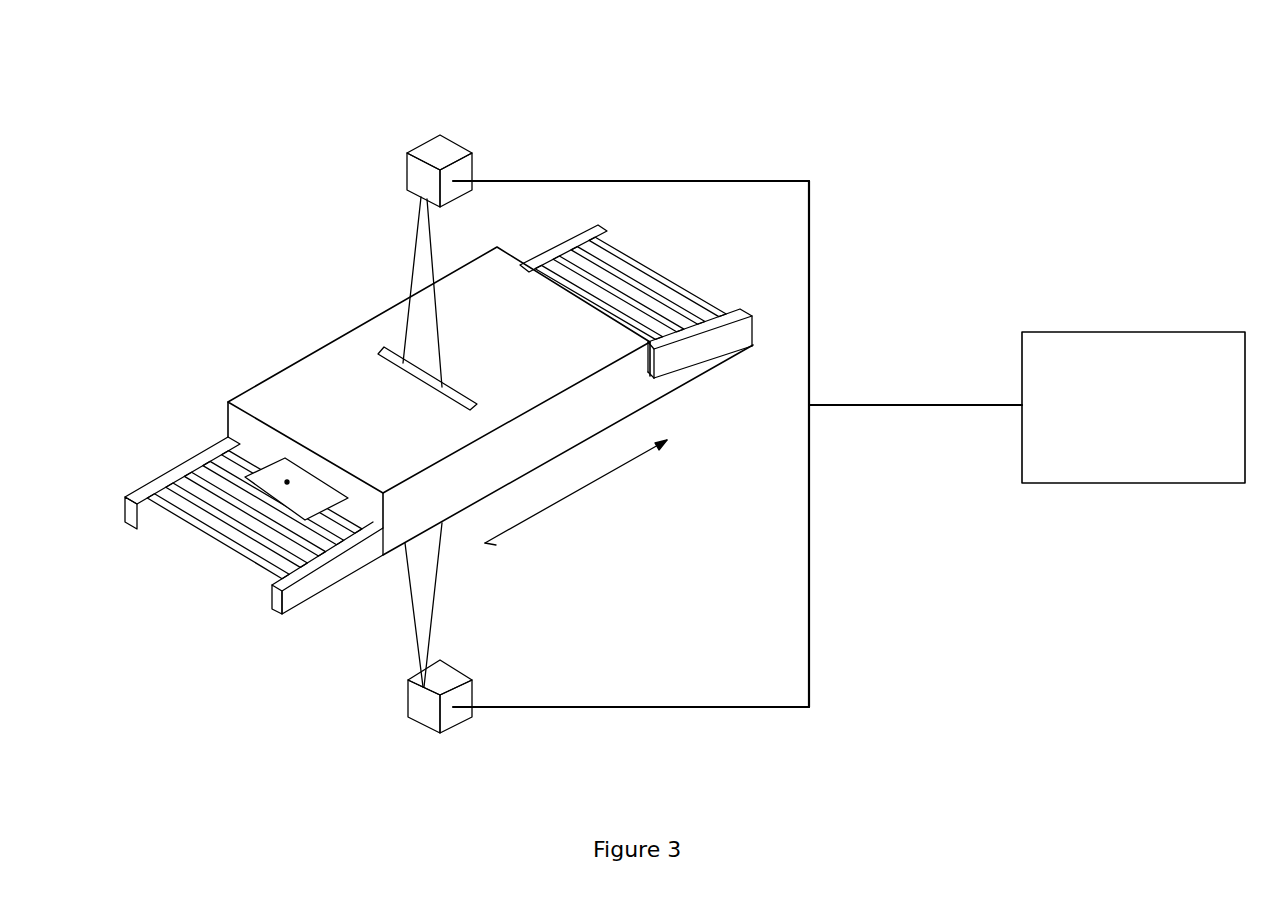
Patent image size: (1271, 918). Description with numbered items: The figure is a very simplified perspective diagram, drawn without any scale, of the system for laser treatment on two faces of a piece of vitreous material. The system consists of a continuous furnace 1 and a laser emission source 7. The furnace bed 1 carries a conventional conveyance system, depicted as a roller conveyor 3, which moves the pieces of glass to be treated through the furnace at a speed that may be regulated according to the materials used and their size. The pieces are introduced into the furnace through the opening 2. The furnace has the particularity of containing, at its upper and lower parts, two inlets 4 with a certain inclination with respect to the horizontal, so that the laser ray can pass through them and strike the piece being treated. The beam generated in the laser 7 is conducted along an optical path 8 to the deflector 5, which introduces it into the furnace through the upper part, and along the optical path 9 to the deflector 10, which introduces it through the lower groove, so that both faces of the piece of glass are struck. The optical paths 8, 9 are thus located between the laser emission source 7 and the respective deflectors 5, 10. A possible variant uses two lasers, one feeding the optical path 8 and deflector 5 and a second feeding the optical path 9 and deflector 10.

The furnace 1 is at (490, 444).
The opening 2 is at (227, 438).
The conveyance system 3 is at (215, 470).
The inlets 4 is at (370, 347).
The deflector 5 is at (490, 211).
The laser emission source 7 is at (1027, 407).
The optical path 8 is at (700, 307).
The optical path 9 is at (694, 582).
The deflector 10 is at (478, 650).